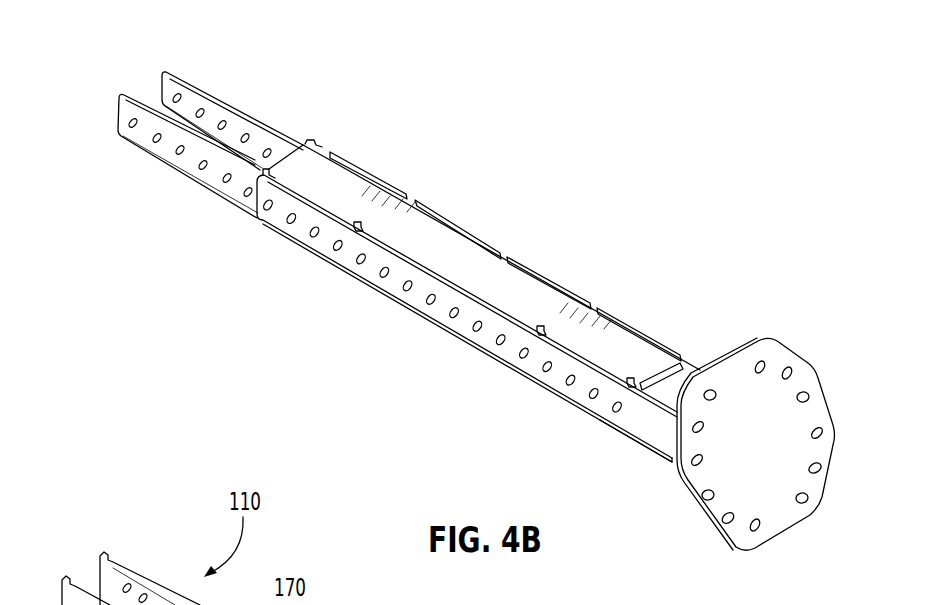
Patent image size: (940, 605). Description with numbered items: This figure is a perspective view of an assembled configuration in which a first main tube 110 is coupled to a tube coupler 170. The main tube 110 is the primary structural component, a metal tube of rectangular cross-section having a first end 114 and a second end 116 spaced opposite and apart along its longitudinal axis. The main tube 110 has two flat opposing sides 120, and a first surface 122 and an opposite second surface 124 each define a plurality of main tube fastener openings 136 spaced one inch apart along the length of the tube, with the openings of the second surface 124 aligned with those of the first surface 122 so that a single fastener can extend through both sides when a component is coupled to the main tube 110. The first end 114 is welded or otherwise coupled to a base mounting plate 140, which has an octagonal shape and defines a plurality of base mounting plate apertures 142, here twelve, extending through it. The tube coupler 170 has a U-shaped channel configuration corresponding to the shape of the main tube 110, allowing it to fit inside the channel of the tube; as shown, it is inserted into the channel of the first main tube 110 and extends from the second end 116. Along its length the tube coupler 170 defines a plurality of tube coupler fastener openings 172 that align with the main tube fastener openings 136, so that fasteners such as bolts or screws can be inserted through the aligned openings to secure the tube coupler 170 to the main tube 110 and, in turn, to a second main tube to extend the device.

The main tube 110 is at (539, 170).
The first end 114 is at (636, 463).
The second end 116 is at (250, 234).
The flat opposing sides 120 is at (503, 297).
The first surface 122 is at (550, 380).
The second surface 124 is at (652, 337).
The main tube fastener openings 136 is at (428, 304).
The base mounting plate 140 is at (852, 384).
The base mounting plate apertures 142 is at (808, 500).
The tube coupler 170 is at (236, 83).
The tube coupler fastener openings 172 is at (250, 191).